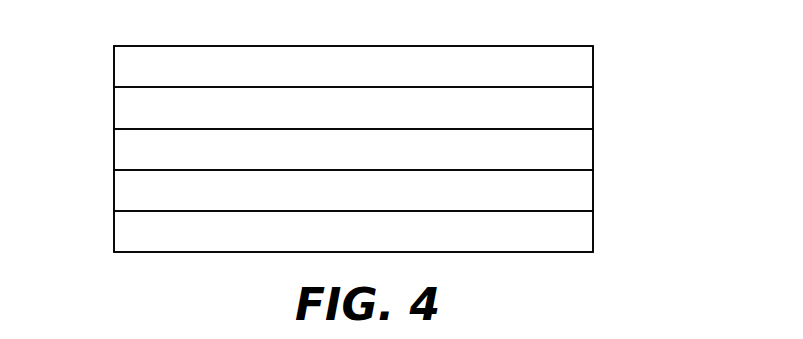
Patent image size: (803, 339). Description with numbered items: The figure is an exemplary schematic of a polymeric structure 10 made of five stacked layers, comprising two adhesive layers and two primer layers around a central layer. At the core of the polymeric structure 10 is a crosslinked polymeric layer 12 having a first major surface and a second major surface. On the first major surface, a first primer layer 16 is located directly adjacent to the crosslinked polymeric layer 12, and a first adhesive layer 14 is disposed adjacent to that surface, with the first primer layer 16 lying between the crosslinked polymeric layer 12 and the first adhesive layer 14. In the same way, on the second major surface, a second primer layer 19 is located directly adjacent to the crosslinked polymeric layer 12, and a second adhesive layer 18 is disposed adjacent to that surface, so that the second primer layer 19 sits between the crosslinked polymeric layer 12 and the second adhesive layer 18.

The polymeric structure 10 is at (634, 100).
The first adhesive layer 14 is at (128, 67).
The first primer layer 16 is at (128, 106).
The crosslinked polymeric layer 12 is at (128, 152).
The second primer layer 19 is at (128, 191).
The second adhesive layer 18 is at (128, 237).